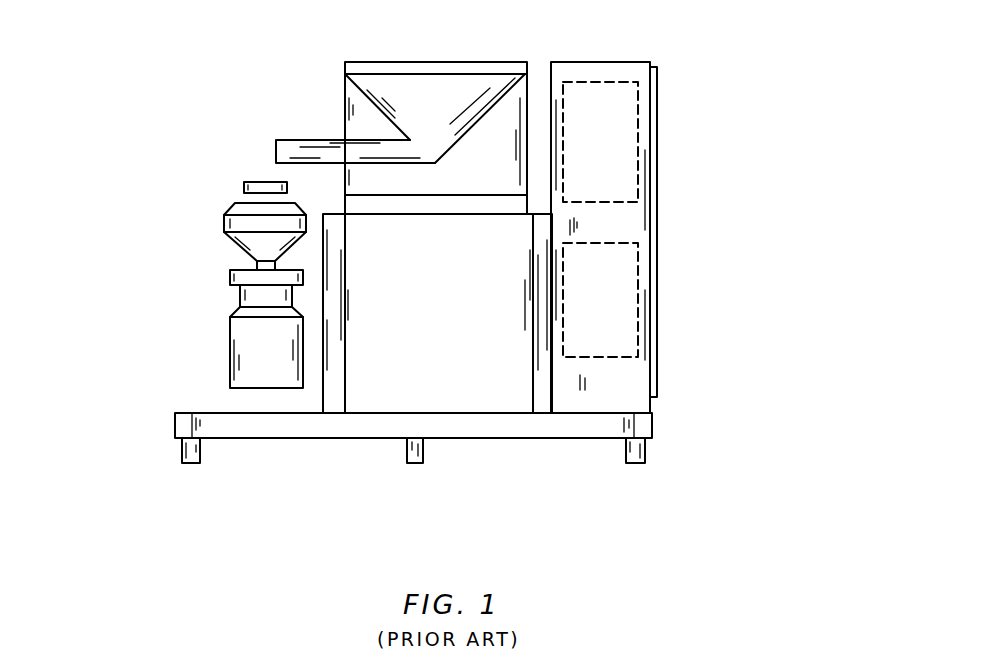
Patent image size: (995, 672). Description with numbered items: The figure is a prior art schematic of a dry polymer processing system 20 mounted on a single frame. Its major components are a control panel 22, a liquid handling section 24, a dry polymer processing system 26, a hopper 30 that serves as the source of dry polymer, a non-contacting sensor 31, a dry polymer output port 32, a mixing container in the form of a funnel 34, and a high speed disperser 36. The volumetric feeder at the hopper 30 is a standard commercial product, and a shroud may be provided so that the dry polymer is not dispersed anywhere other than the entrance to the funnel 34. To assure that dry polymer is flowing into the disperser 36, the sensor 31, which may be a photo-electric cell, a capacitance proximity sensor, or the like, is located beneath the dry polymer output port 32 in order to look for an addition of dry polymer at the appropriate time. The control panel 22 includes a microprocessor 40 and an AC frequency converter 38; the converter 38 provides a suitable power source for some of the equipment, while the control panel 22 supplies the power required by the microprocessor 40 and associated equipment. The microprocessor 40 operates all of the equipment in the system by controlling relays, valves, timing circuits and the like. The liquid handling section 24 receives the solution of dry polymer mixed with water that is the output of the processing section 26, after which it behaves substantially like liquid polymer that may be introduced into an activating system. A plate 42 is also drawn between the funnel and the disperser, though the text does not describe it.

The dry polymer processing system 20 is at (366, 460).
The control panel 22 is at (660, 383).
The liquid handling section 24 is at (452, 326).
The dry polymer processing system 26 is at (174, 237).
The hopper 30 is at (448, 109).
The non-contacting sensor 31 is at (243, 183).
The dry polymer output port 32 is at (295, 137).
The funnel 34 is at (248, 243).
The high speed disperser 36 is at (240, 340).
The AC frequency converter 38 is at (638, 175).
The microprocessor 40 is at (638, 335).
The plate 42 is at (232, 278).